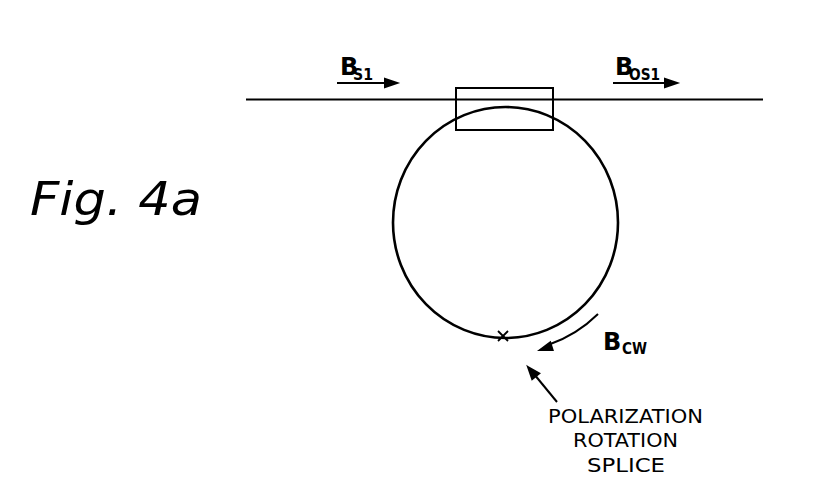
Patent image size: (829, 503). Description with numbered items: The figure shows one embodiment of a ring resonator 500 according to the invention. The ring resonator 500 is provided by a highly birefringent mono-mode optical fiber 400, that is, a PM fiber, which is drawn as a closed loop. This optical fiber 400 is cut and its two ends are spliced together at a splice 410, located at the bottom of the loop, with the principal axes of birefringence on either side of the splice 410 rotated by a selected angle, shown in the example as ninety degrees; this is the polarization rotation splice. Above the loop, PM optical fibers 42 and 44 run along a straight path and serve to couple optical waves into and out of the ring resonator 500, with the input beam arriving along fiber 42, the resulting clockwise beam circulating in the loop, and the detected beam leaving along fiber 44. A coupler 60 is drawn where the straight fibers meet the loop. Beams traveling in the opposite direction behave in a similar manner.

The PM optical fiber 42 is at (300, 100).
The PM optical fiber 44 is at (693, 100).
The fiber optic coupler 60 is at (499, 88).
The highly birefringent mono-mode optical fiber 400 is at (618, 222).
The ring resonator 500 is at (527, 228).
The polarization rotation splice 410 is at (503, 340).